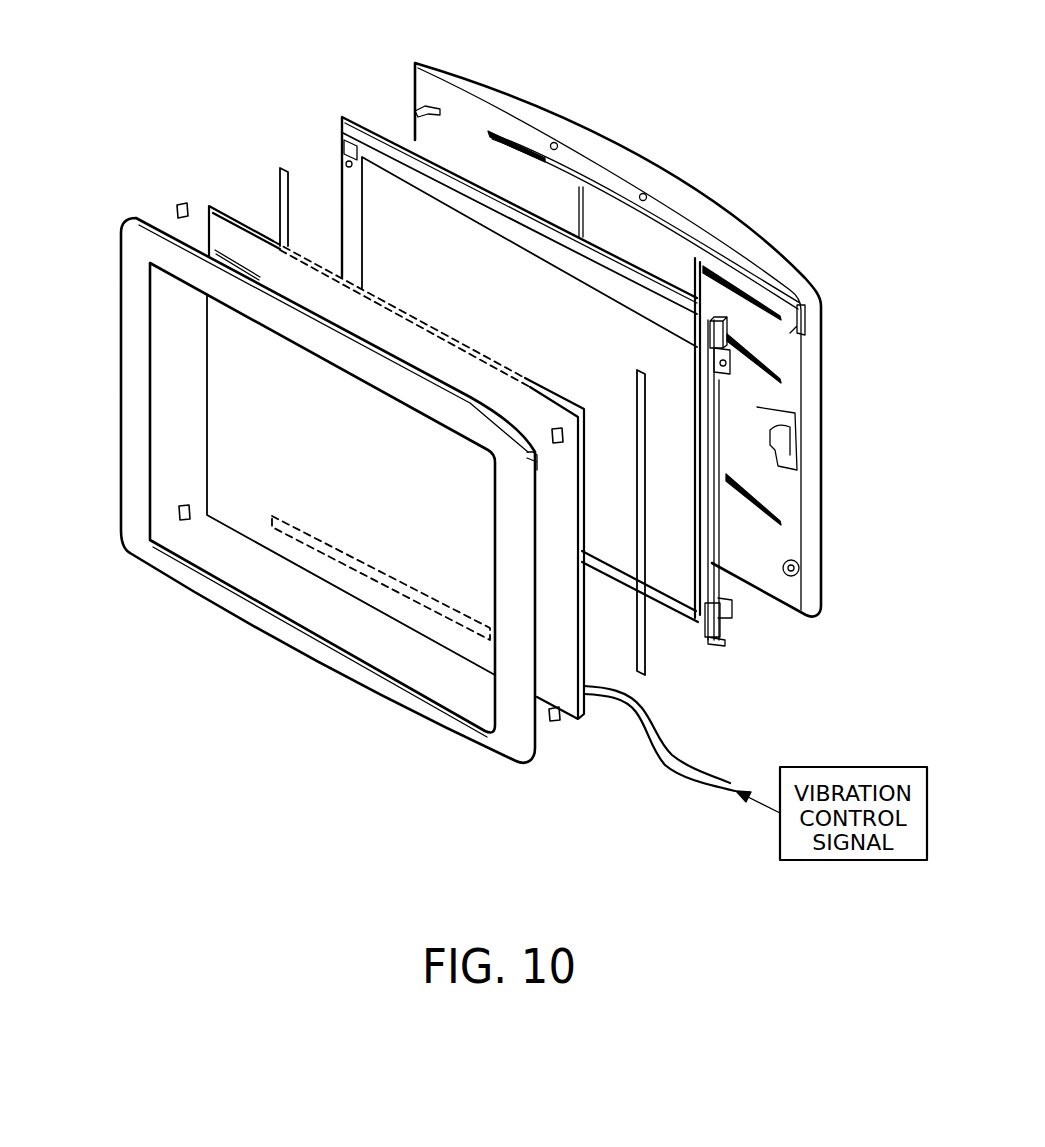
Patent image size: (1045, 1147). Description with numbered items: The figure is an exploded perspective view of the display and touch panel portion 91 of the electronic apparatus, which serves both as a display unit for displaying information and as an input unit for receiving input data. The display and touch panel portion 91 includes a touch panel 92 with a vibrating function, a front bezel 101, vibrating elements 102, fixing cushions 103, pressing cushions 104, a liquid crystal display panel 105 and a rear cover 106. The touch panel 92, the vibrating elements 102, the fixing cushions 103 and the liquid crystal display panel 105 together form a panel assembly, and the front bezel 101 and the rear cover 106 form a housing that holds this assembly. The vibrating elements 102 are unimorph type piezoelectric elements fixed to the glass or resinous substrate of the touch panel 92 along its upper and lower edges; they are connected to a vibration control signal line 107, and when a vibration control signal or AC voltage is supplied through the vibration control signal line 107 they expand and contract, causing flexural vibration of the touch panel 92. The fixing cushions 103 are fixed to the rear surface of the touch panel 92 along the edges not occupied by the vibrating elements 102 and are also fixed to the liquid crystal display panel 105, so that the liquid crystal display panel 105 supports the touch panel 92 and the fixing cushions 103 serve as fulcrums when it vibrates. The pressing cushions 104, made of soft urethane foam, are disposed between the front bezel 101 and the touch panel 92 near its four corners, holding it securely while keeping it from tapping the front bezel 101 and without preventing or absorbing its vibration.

The display and touch panel portion 91 is at (623, 104).
The touch panel 92 is at (561, 657).
The front bezel 101 is at (405, 680).
The vibrating elements 102 is at (274, 241).
The fixing cushions 103 is at (283, 168).
The pressing cushions 104 is at (177, 207).
The liquid crystal display panel 105 is at (732, 614).
The rear cover 106 is at (821, 560).
The vibration control signal line 107 is at (660, 743).